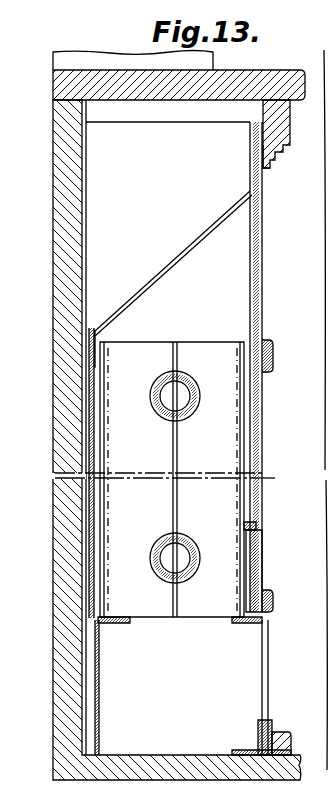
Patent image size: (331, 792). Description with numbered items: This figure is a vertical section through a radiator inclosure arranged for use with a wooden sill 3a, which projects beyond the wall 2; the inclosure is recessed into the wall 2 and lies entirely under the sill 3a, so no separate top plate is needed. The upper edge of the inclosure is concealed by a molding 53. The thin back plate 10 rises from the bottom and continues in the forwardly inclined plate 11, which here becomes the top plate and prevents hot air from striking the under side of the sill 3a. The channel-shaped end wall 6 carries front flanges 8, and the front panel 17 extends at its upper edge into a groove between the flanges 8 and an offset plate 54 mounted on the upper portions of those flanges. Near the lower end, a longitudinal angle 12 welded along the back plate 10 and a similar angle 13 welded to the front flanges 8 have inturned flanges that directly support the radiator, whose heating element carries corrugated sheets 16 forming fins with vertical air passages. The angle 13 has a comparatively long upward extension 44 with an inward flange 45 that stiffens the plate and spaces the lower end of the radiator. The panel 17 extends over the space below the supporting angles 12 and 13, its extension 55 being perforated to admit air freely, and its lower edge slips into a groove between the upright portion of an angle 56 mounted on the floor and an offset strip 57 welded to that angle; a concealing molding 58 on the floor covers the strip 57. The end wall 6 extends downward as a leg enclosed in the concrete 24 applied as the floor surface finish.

The wall 2 is at (62, 194).
The wooden sill 3a is at (62, 82).
The end walls 6 is at (168, 165).
The front flanges 8 is at (282, 165).
The back plate 10 is at (96, 395).
The inclined plate 11 is at (175, 260).
The longitudinal angle 12 is at (120, 624).
The angle 13 is at (248, 624).
The corrugated sheets 16 is at (172, 479).
The panel 17 is at (274, 372).
The concrete 24 is at (145, 755).
The upward extension 44 is at (255, 566).
The inward flange 45 is at (248, 524).
The molding 53 is at (264, 110).
The offset plate 54 is at (272, 160).
The extension 55 is at (269, 664).
The angle 56 is at (258, 738).
The offset strip 57 is at (280, 732).
The concealing molding 58 is at (291, 750).